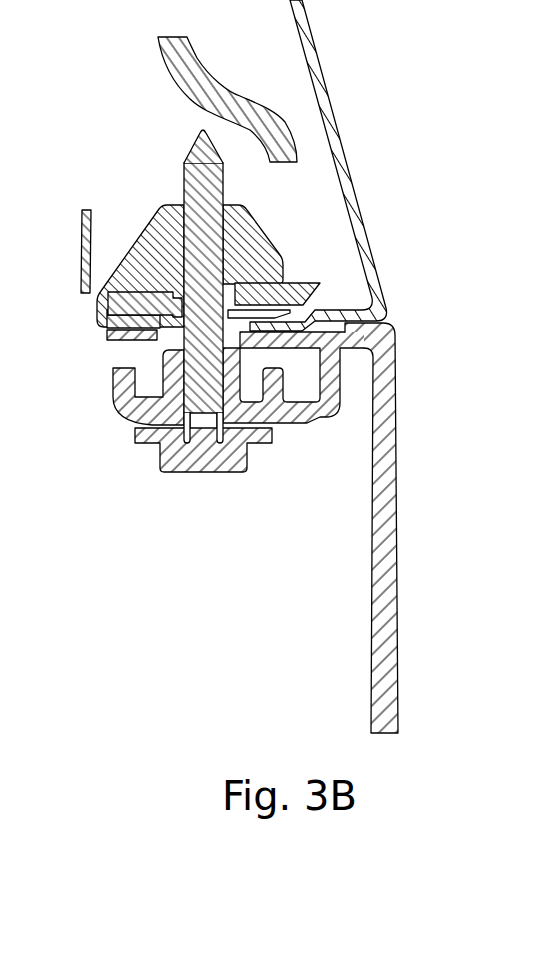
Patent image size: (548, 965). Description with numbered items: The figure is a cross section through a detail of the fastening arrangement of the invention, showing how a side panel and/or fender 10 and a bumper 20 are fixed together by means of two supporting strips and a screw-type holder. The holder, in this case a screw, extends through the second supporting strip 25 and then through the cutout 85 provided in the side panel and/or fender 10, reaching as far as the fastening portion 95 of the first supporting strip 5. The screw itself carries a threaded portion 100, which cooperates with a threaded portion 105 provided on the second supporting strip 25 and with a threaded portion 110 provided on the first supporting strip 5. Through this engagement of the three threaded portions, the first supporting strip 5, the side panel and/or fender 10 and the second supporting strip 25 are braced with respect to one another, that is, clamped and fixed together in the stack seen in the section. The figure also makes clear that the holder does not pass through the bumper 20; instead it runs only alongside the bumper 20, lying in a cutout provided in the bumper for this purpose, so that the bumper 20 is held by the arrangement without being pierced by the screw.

The first supporting strip 5 is at (234, 113).
The side panel and/or fender 10 is at (338, 133).
The bumper 20 is at (388, 583).
The second supporting strip 25 is at (332, 404).
The cutout 85 is at (171, 338).
The fastening portion 95 is at (252, 250).
The threaded portion 100 is at (192, 250).
The threaded portion 105 is at (179, 382).
The threaded portion 110 is at (180, 223).